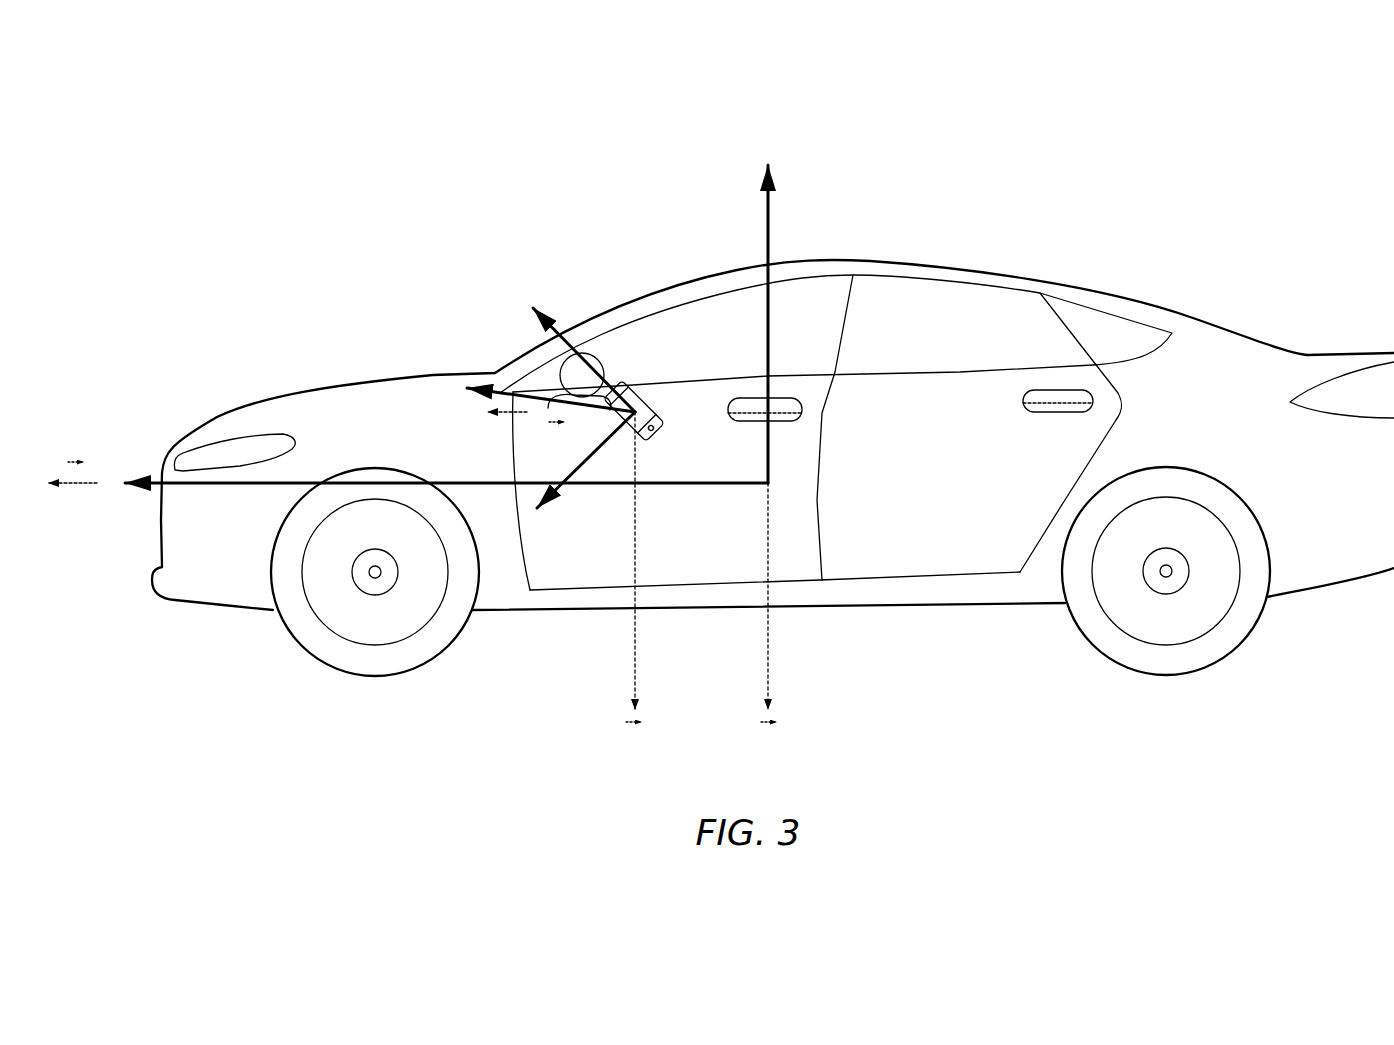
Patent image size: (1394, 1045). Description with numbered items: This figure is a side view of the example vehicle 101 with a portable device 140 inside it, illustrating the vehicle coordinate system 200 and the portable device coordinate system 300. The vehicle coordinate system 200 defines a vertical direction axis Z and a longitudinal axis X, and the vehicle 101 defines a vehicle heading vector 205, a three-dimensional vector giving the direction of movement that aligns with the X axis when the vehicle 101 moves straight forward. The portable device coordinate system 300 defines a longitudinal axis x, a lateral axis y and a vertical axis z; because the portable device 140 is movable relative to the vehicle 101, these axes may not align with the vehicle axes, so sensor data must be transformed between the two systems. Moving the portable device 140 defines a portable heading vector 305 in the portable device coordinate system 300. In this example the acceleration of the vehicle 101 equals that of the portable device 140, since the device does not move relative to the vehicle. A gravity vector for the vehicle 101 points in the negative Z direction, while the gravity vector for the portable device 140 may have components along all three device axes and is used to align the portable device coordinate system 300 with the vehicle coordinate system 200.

The vehicle 101 is at (1198, 322).
The portable device 140 is at (653, 381).
The vehicle coordinate system 200 is at (797, 215).
The vehicle heading vector 205 is at (73, 482).
The portable device coordinate system 300 is at (558, 325).
The portable heading vector 305 is at (527, 413).